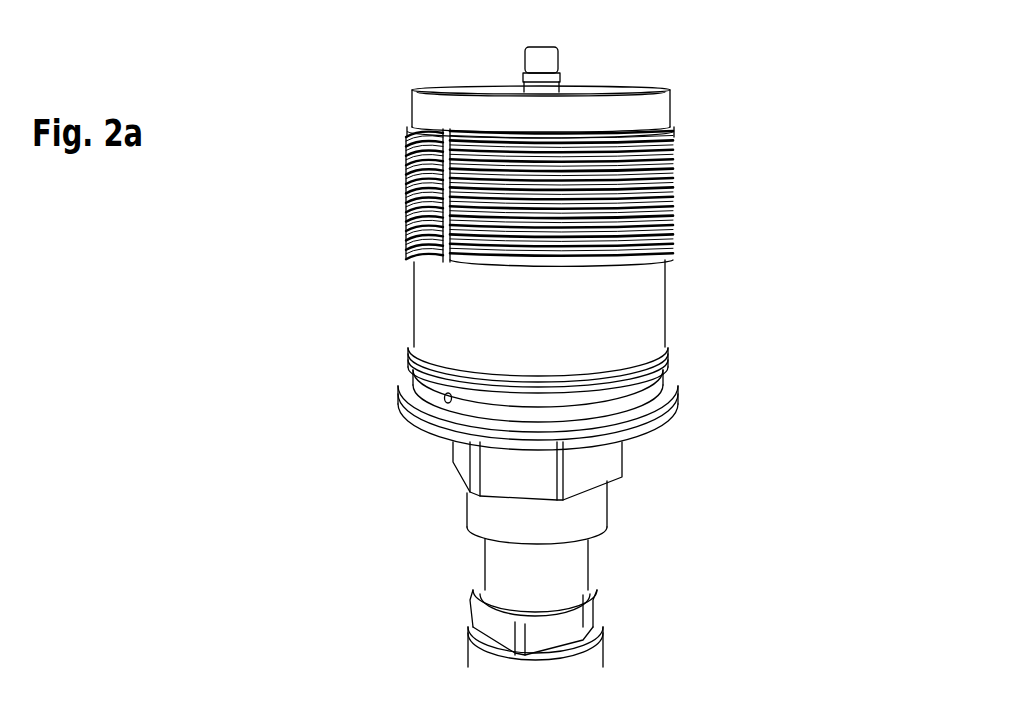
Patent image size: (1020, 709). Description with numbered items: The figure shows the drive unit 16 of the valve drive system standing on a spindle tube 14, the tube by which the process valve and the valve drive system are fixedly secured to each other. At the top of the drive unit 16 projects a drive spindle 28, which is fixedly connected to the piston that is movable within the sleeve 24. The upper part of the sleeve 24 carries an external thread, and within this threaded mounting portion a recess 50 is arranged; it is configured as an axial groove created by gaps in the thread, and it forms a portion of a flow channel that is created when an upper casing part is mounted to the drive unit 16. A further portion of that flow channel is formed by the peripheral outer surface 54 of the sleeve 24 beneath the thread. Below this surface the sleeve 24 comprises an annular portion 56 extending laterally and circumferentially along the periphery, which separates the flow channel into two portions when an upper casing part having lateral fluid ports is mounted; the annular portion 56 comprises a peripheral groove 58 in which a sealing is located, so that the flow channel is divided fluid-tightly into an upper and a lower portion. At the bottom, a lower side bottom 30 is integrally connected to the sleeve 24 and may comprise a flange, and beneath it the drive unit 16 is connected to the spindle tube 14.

The drive unit 16 is at (746, 172).
The drive spindle 28 is at (543, 62).
The recess 50 is at (446, 180).
The sleeve 24 is at (483, 315).
The peripheral outer surface 54 is at (617, 310).
The annular portion 56 is at (667, 354).
The peripheral groove 58 is at (665, 362).
The lower side bottom 30 is at (610, 458).
The spindle tube 14 is at (565, 582).